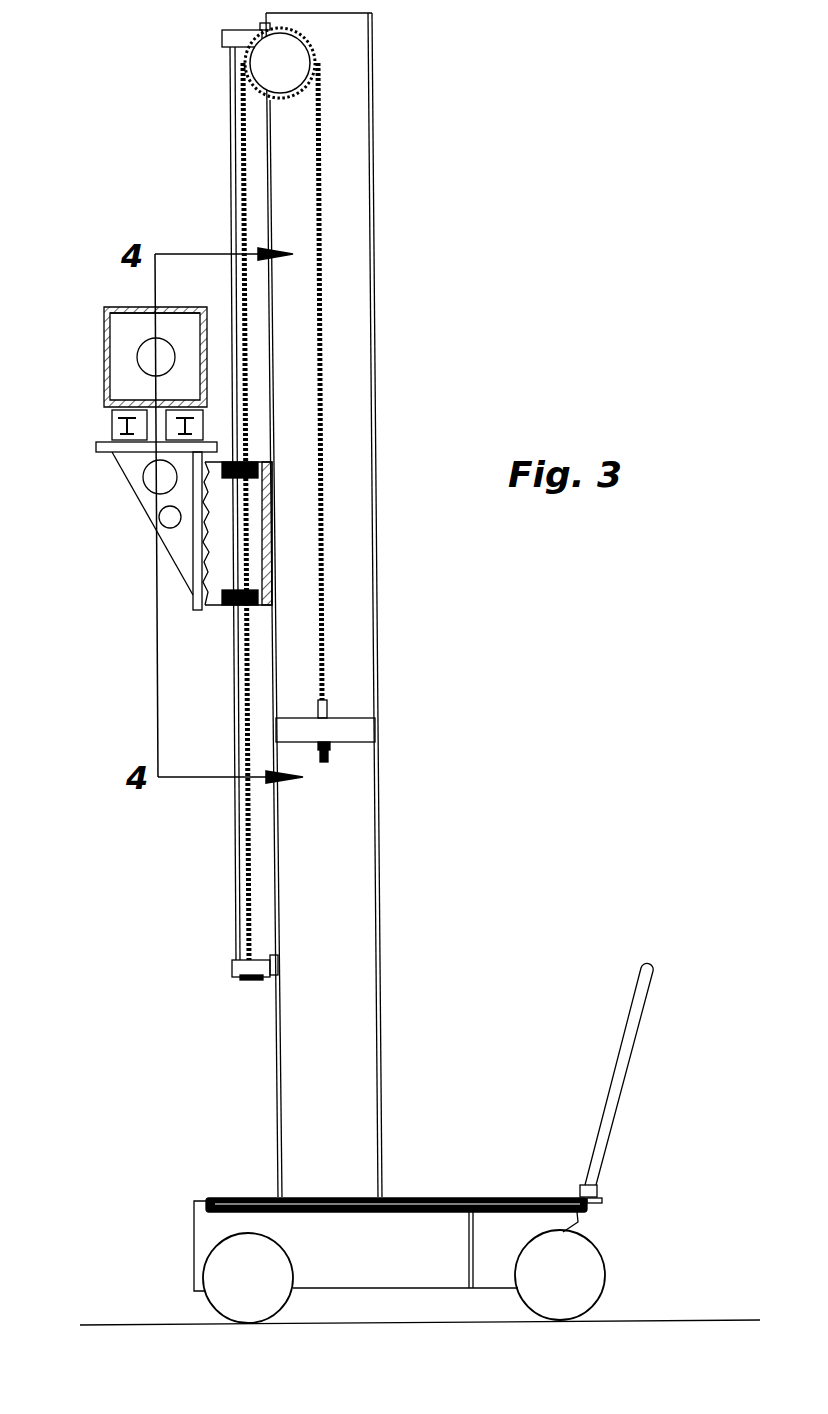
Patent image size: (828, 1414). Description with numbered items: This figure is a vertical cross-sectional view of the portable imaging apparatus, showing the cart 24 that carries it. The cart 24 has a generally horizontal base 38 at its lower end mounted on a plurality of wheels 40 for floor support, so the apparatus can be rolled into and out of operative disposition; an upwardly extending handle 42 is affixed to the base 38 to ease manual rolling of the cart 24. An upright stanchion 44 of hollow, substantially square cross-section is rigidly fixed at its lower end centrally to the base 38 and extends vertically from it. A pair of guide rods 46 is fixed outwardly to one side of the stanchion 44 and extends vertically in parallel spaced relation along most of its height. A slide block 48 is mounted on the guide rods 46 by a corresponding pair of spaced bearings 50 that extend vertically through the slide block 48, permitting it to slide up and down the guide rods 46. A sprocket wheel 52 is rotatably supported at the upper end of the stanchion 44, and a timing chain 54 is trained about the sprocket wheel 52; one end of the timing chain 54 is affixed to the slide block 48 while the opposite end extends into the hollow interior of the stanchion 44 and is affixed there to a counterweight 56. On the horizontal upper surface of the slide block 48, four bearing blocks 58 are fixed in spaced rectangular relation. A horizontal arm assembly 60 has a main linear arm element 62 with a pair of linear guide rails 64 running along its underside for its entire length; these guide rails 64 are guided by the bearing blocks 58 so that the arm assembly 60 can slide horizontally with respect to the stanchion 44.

The cart 24 is at (176, 1144).
The base 38 is at (455, 1197).
The wheels 40 is at (592, 1262).
The handle 42 is at (628, 1053).
The stanchion 44 is at (378, 1000).
The guide rods 46 is at (240, 905).
The slide block 48 is at (185, 556).
The bearings 50 is at (258, 465).
The sprocket wheel 52 is at (288, 53).
The timing chain 54 is at (328, 183).
The counterweight 56 is at (360, 736).
The bearing blocks 58 is at (130, 438).
The horizontal arm assembly 60 is at (104, 327).
The main linear arm element 62 is at (134, 310).
The linear guide rails 64 is at (180, 412).